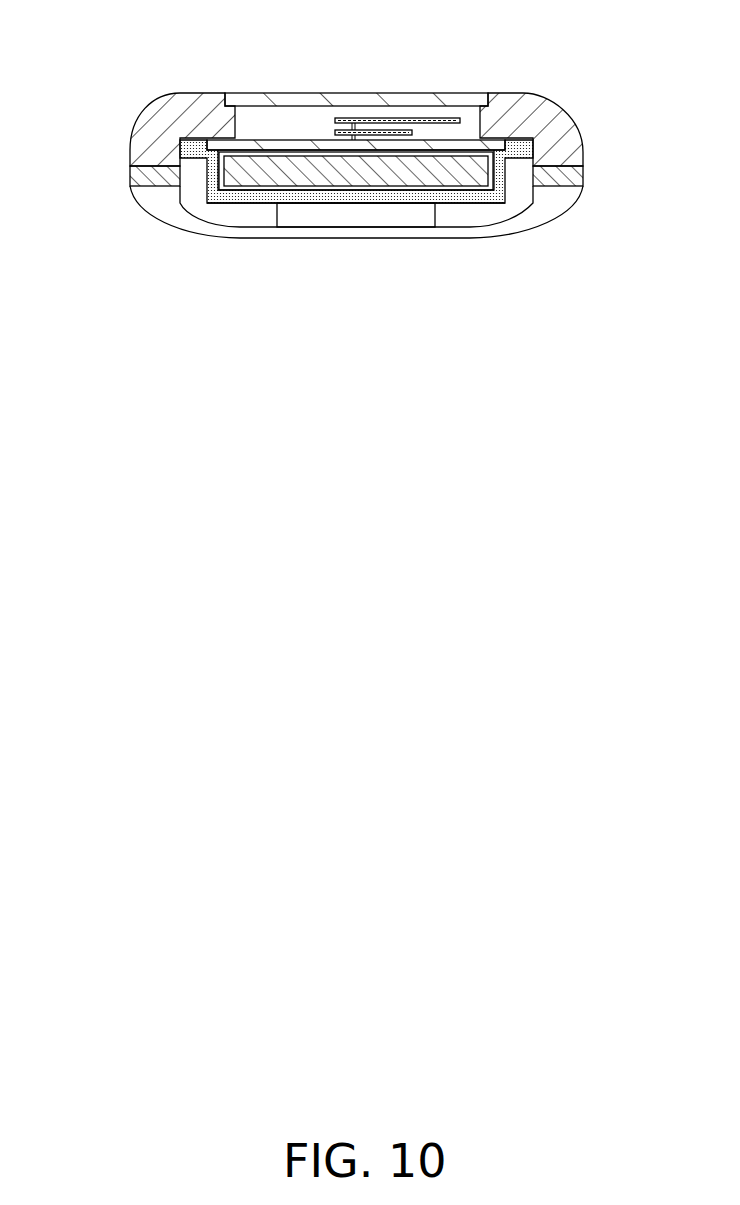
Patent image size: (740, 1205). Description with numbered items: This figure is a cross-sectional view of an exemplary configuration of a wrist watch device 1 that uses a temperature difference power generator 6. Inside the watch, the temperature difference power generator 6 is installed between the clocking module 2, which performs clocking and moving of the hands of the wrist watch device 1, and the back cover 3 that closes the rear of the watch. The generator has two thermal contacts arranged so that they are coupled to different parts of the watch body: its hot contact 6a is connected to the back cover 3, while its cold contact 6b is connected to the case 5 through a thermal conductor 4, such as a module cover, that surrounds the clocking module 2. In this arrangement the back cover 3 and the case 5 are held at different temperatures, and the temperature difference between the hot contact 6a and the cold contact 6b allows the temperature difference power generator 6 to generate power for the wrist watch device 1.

The wrist watch device 1 is at (121, 117).
The clocking module 2 is at (470, 183).
The back cover 3 is at (547, 218).
The thermal conductor 4 is at (222, 206).
The case 5 is at (547, 110).
The temperature difference power generator 6 is at (303, 215).
The hot contact 6a is at (350, 227).
The cold contact 6b is at (270, 197).